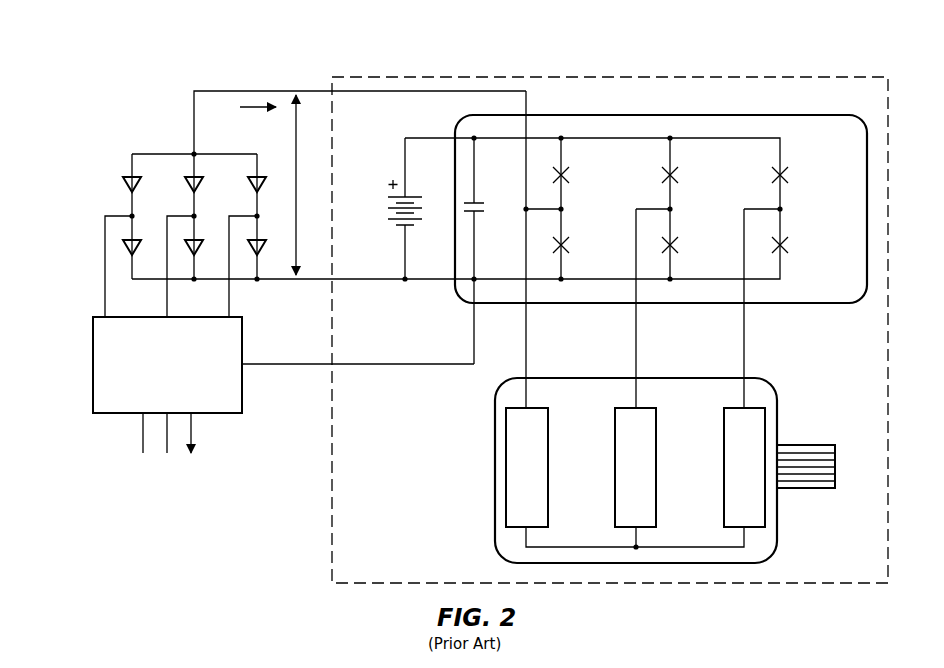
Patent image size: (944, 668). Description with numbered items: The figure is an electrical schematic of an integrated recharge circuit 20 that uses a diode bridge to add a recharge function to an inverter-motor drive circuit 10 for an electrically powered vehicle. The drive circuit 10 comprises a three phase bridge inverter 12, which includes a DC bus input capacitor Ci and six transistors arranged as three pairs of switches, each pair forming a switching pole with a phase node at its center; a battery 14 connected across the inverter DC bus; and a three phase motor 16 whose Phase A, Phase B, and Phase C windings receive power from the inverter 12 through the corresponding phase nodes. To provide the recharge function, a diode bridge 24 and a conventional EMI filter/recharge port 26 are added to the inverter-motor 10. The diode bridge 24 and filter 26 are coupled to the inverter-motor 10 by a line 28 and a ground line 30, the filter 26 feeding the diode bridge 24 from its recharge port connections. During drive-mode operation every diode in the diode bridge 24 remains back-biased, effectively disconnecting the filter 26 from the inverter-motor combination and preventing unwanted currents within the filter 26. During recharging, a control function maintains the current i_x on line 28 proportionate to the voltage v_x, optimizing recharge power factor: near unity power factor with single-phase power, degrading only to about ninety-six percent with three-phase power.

The drive circuit 10 is at (772, 77).
The three phase bridge inverter 12 is at (780, 114).
The battery 14 is at (388, 181).
The three phase motor 16 is at (777, 423).
The integrated recharge circuit 20 is at (206, 59).
The diode bridge 24 is at (108, 161).
The EMI filter/recharge port 26 is at (93, 366).
The line 28 is at (253, 91).
The ground line 30 is at (292, 364).